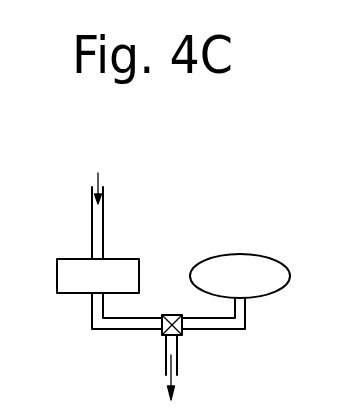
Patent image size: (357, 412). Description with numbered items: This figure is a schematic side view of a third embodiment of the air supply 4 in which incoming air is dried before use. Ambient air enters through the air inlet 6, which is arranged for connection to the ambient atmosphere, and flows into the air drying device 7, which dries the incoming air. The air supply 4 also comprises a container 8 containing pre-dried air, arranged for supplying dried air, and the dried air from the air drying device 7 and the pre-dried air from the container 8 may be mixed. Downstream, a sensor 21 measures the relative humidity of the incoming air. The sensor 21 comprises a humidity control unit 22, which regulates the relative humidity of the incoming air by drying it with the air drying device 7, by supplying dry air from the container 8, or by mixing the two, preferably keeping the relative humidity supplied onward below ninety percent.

The air supply 4 is at (167, 210).
The air inlet 6 is at (91, 192).
The air drying device 7 is at (66, 281).
The container 8 is at (226, 268).
The sensor 21 is at (153, 334).
The humidity control unit 22 is at (184, 326).